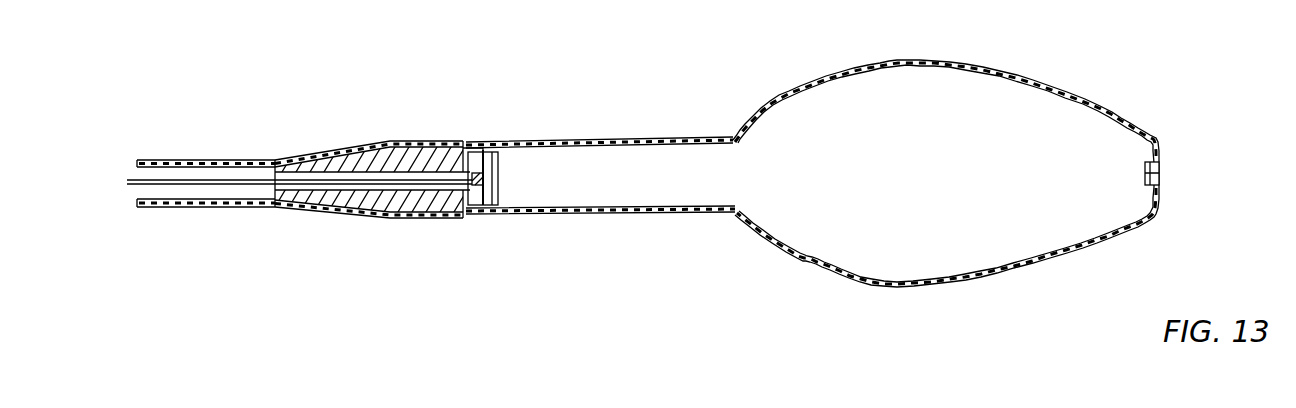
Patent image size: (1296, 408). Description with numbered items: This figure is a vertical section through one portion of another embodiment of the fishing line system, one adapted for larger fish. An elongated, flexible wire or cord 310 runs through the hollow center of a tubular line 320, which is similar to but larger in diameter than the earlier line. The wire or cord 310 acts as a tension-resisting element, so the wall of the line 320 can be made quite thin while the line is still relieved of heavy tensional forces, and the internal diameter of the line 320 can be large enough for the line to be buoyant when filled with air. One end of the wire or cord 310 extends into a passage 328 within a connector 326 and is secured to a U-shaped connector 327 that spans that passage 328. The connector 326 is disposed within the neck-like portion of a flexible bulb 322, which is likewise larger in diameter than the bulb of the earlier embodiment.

The flexible wire or cord 310 is at (245, 177).
The tubular line 320 is at (265, 207).
The flexible bulb 322 is at (1015, 278).
The connector 326 is at (425, 158).
The U-shaped connector 327 is at (500, 170).
The passage 328 is at (497, 184).